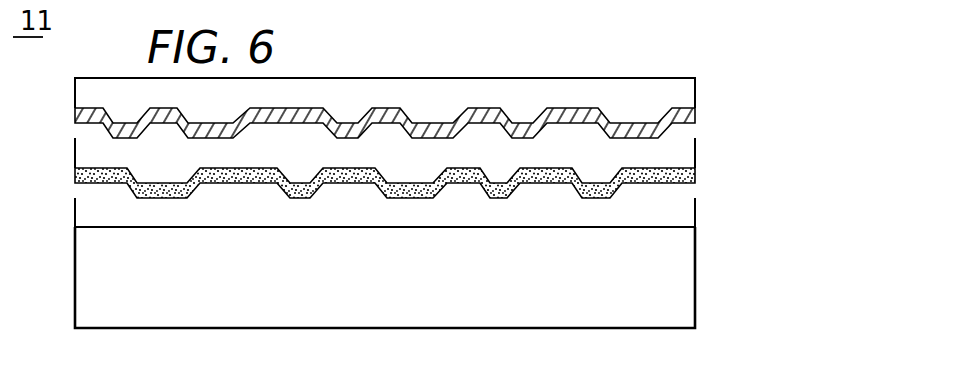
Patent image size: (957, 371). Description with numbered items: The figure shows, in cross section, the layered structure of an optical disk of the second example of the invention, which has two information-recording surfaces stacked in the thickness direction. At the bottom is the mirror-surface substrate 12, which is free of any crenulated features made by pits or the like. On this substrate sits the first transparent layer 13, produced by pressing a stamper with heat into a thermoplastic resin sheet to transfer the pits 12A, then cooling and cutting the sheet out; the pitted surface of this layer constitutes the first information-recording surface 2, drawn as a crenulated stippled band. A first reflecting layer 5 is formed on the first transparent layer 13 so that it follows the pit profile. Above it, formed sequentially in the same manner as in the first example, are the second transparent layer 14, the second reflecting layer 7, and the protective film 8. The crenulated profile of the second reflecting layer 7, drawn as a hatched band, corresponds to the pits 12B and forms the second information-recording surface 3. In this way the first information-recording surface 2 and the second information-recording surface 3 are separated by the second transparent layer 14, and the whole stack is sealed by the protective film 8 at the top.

The first information-recording surface 2 is at (63, 176).
The second information-recording surface 3 is at (63, 114).
The first reflecting layer 5 is at (690, 174).
The second reflecting layer 7 is at (689, 117).
The protective film 8 is at (683, 93).
The mirror-surface substrate 12 is at (680, 275).
The pits of first information-recording surface 12A is at (402, 198).
The grooves of intermediate layer 12B is at (519, 122).
The first transparent layer 13 is at (685, 202).
The second transparent layer 14 is at (685, 148).